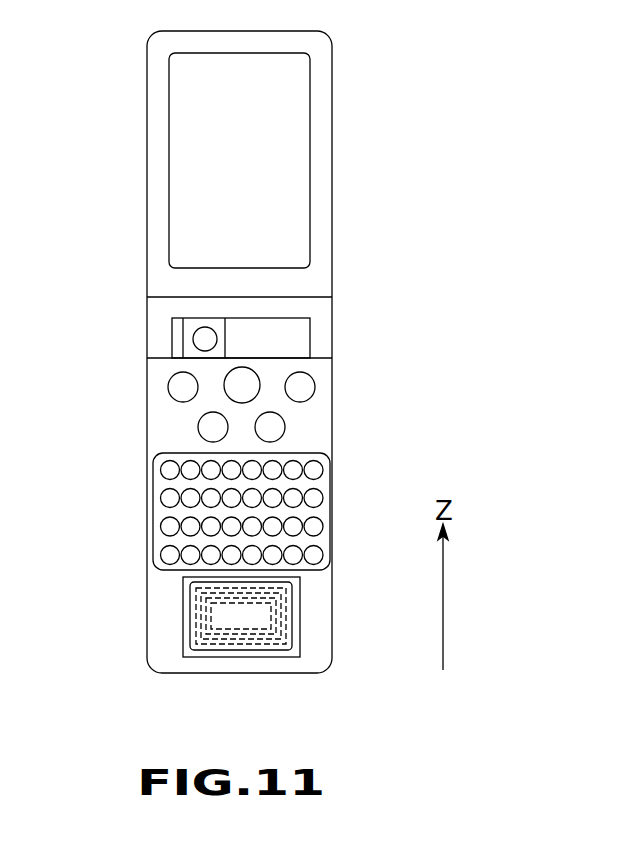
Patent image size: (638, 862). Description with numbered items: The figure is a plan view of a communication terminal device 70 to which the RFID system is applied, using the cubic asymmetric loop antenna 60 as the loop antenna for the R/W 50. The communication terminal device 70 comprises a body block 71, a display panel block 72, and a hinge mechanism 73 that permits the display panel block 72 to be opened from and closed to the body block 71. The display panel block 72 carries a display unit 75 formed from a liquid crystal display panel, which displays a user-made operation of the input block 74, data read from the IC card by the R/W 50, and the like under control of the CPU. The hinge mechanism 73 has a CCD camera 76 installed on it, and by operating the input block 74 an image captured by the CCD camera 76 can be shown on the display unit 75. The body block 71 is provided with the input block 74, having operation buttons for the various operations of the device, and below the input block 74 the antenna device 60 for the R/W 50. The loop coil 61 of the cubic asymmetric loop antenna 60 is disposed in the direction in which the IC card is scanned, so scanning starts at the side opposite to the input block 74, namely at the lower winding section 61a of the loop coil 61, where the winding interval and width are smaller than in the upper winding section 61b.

The communication terminal device 70 is at (452, 88).
The display panel block 72 is at (147, 172).
The display unit 75 is at (332, 133).
The hinge mechanism 73 is at (298, 332).
The CCD camera 76 is at (197, 343).
The body block 71 is at (147, 503).
The input block 74 is at (299, 489).
The cubic asymmetric loop antenna 60 is at (300, 608).
The loop coil 61 is at (67, 567).
The upper winding section 61b is at (213, 587).
The lower winding section 61a is at (197, 650).
The R/W 50 is at (266, 673).